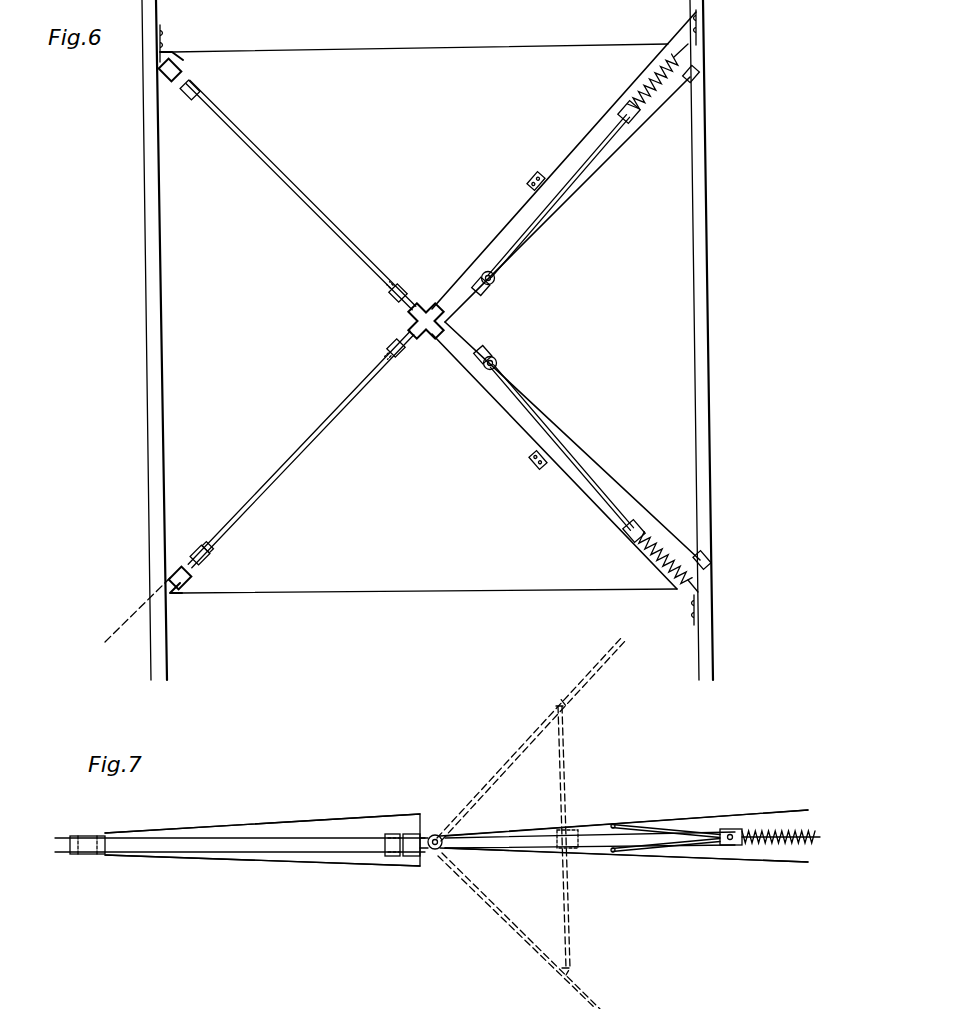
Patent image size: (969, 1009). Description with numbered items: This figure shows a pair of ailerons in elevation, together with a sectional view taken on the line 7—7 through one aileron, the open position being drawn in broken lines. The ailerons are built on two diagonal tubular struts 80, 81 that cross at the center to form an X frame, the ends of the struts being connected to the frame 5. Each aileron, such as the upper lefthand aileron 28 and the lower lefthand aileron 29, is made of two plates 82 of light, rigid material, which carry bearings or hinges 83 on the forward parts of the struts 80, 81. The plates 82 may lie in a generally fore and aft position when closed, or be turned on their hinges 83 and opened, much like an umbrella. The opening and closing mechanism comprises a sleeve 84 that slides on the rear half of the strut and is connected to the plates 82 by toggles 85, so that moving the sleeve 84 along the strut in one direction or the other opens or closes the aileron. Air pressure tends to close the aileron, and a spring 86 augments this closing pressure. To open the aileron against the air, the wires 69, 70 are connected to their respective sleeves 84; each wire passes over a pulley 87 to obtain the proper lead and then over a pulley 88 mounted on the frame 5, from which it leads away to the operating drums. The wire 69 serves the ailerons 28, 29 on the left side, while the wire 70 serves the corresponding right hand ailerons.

In FIG. 6, the frame 5 is at (718, 272).
In FIG. 6, the section line 7— 7 is at (136, 610).
In FIG. 6, the upper lefthand aileron 28 is at (424, 318).
In FIG. 7, the upper lefthand aileron 28 is at (624, 827).
In FIG. 7, the lower lefthand aileron 29 is at (262, 854).
In FIG. 6, the wire 69 is at (558, 204).
In FIG. 6, the wire 70 is at (555, 395).
In FIG. 6, the diagonal tubular strut 80 is at (322, 412).
In FIG. 7, the diagonal tubular strut 80 is at (525, 842).
In FIG. 6, the diagonal tubular strut 81 is at (312, 216).
In FIG. 6, the plate 82 is at (324, 322).
In FIG. 7, the plate 82 is at (362, 820).
In FIG. 6, the bearing or hinge 83 is at (392, 342).
In FIG. 7, the bearing or hinge 83 is at (392, 832).
In FIG. 6, the sleeve 84 is at (636, 122).
In FIG. 7, the sleeve 84 is at (733, 830).
In FIG. 6, the toggle 85 is at (598, 148).
In FIG. 7, the toggle 85 is at (640, 852).
In FIG. 6, the spring 86 is at (648, 84).
In FIG. 7, the spring 86 is at (770, 848).
In FIG. 6, the pulley 87 is at (494, 288).
In FIG. 6, the pulley 88 is at (700, 74).